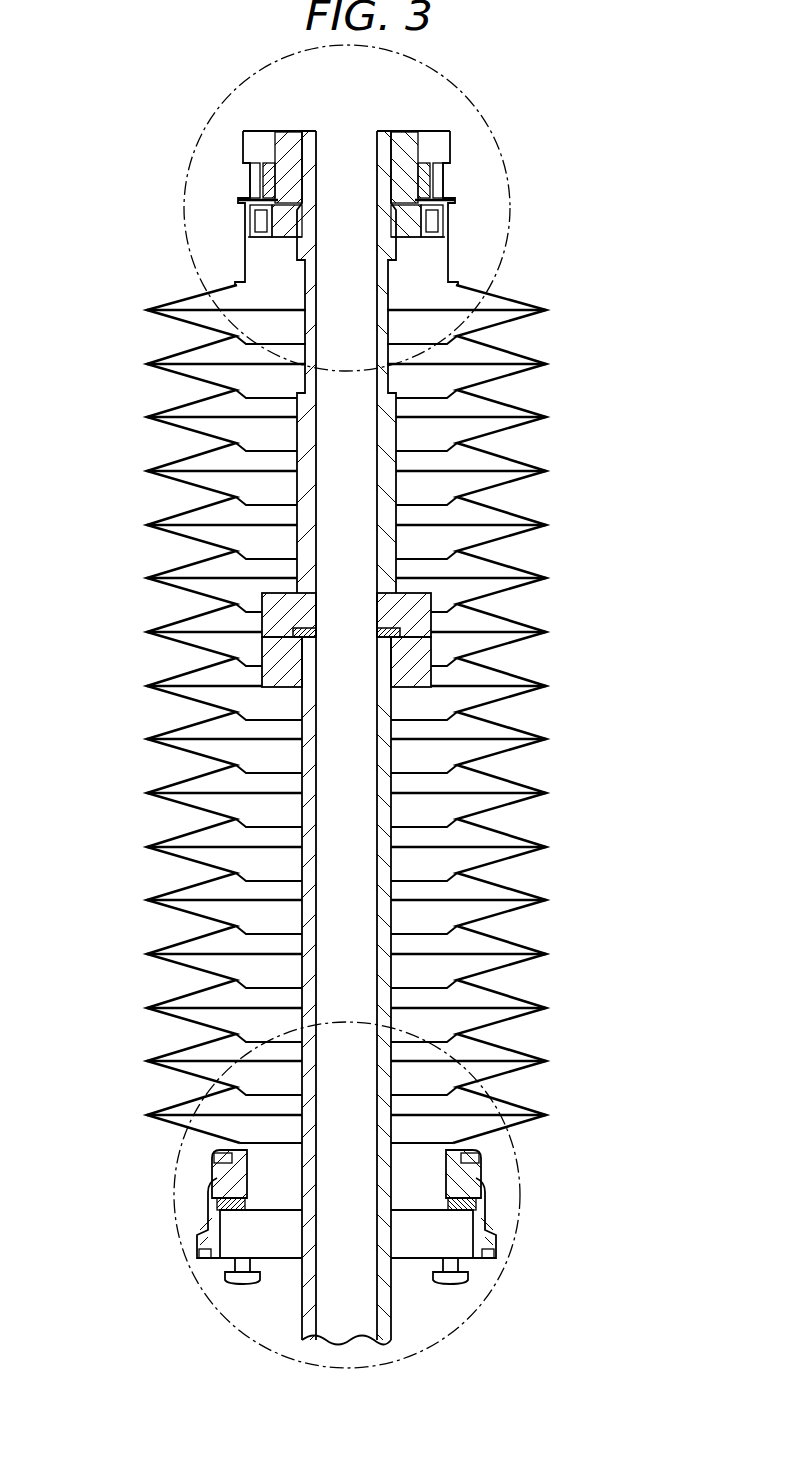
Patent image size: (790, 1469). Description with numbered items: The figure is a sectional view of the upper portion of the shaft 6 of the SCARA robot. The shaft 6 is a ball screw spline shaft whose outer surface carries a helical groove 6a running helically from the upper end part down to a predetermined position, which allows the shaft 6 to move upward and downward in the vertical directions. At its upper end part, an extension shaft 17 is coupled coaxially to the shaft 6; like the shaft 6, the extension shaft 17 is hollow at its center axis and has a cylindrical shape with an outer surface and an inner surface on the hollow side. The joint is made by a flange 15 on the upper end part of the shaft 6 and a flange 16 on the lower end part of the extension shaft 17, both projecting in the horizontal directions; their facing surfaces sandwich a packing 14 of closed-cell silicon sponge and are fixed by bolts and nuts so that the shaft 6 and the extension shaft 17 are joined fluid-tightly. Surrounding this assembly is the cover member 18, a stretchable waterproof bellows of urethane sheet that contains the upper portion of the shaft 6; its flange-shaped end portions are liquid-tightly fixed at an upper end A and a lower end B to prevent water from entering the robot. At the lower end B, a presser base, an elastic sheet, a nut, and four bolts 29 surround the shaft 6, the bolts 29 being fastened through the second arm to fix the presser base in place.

The upper end A is at (473, 107).
The lower end B is at (521, 1177).
The shaft 6 is at (394, 757).
The helical groove 6a is at (380, 807).
The packing 14 is at (403, 624).
The flange 15 is at (417, 678).
The flange 16 is at (417, 603).
The extension shaft 17 is at (397, 430).
The cover member 18 is at (541, 356).
The bolt 29 is at (228, 1283).